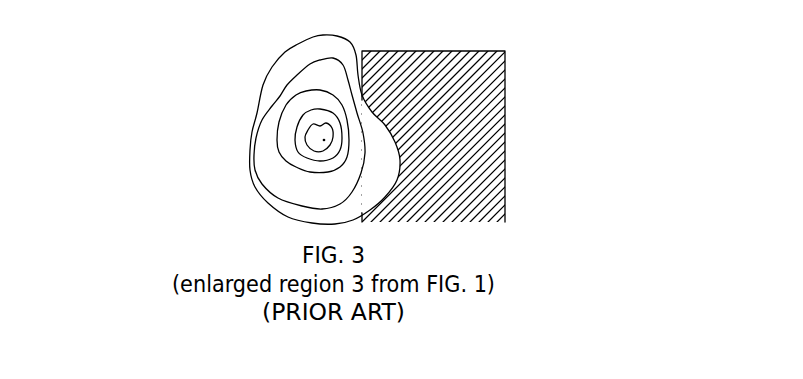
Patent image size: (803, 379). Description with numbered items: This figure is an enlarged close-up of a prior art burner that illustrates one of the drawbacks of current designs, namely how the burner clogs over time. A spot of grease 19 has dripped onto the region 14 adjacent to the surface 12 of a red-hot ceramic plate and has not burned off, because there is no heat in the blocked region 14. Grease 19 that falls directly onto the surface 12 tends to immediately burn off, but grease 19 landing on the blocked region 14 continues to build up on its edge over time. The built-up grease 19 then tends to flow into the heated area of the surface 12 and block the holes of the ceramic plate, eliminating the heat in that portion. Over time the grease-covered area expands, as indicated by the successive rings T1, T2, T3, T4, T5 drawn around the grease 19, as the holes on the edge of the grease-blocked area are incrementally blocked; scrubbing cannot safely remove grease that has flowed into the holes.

The surface 12 is at (495, 115).
The region 14 is at (264, 112).
The spot of grease 19 is at (324, 140).
The ring T1 is at (308, 136).
The ring T2 is at (294, 139).
The ring T3 is at (278, 149).
The ring T4 is at (253, 167).
The ring T5 is at (249, 178).